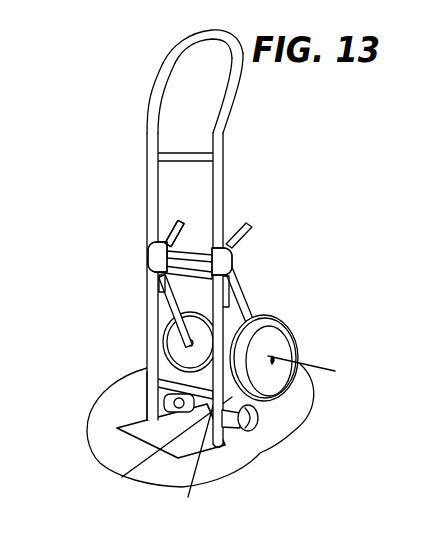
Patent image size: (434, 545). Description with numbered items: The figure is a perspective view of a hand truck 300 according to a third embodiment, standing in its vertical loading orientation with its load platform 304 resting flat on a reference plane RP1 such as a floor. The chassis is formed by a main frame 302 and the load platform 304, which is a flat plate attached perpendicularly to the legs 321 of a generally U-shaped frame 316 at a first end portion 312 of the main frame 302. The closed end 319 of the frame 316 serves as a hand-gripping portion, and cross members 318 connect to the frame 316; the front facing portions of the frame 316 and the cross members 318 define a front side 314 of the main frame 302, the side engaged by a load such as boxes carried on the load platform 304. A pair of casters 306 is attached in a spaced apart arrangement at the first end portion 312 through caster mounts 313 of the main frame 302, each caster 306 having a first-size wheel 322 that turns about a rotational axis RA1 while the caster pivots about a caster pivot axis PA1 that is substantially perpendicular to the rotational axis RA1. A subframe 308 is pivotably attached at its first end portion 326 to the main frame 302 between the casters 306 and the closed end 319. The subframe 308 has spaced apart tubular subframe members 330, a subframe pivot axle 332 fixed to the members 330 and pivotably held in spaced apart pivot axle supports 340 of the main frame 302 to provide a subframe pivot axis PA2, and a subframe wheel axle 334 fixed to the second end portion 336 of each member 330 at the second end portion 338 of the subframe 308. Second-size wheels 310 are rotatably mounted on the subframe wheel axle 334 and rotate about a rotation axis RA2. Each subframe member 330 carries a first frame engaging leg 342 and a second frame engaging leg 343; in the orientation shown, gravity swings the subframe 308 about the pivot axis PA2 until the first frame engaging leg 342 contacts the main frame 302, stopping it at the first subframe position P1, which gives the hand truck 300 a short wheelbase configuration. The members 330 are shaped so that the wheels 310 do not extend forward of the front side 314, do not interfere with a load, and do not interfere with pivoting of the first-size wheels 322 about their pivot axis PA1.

The hand truck 300 is at (235, 174).
The main frame 302 is at (246, 64).
The load platform 304 is at (152, 437).
The casters 306 is at (258, 433).
The subframe 308 is at (240, 286).
The second-size wheels 310 is at (300, 360).
The first end portion 312 is at (112, 378).
The caster mounts 313 is at (240, 428).
The front side 314 is at (146, 131).
The U-shaped frame 316 is at (155, 89).
The cross members 318 is at (156, 157).
The closed end 319 is at (205, 36).
The legs 321 is at (226, 447).
The first-size wheels 322 is at (260, 420).
The first end portion 326 is at (234, 262).
The subframe members 330 is at (166, 248).
The subframe pivot axle 332 is at (187, 237).
The subframe wheel axle 334 is at (186, 350).
The second end portion 336 is at (182, 340).
The second end portion 338 is at (182, 318).
The pivot axle supports 340 is at (157, 250).
The first frame engaging leg 342 is at (160, 269).
The second frame engaging leg 343 is at (172, 243).
The caster pivot axis PA1 is at (195, 457).
The subframe pivot axis PA2 is at (235, 258).
The rotational axis RA1 is at (155, 443).
The rotation axis RA2 is at (324, 370).
The reference plane RP1 is at (312, 386).
The first subframe position P1 is at (284, 300).